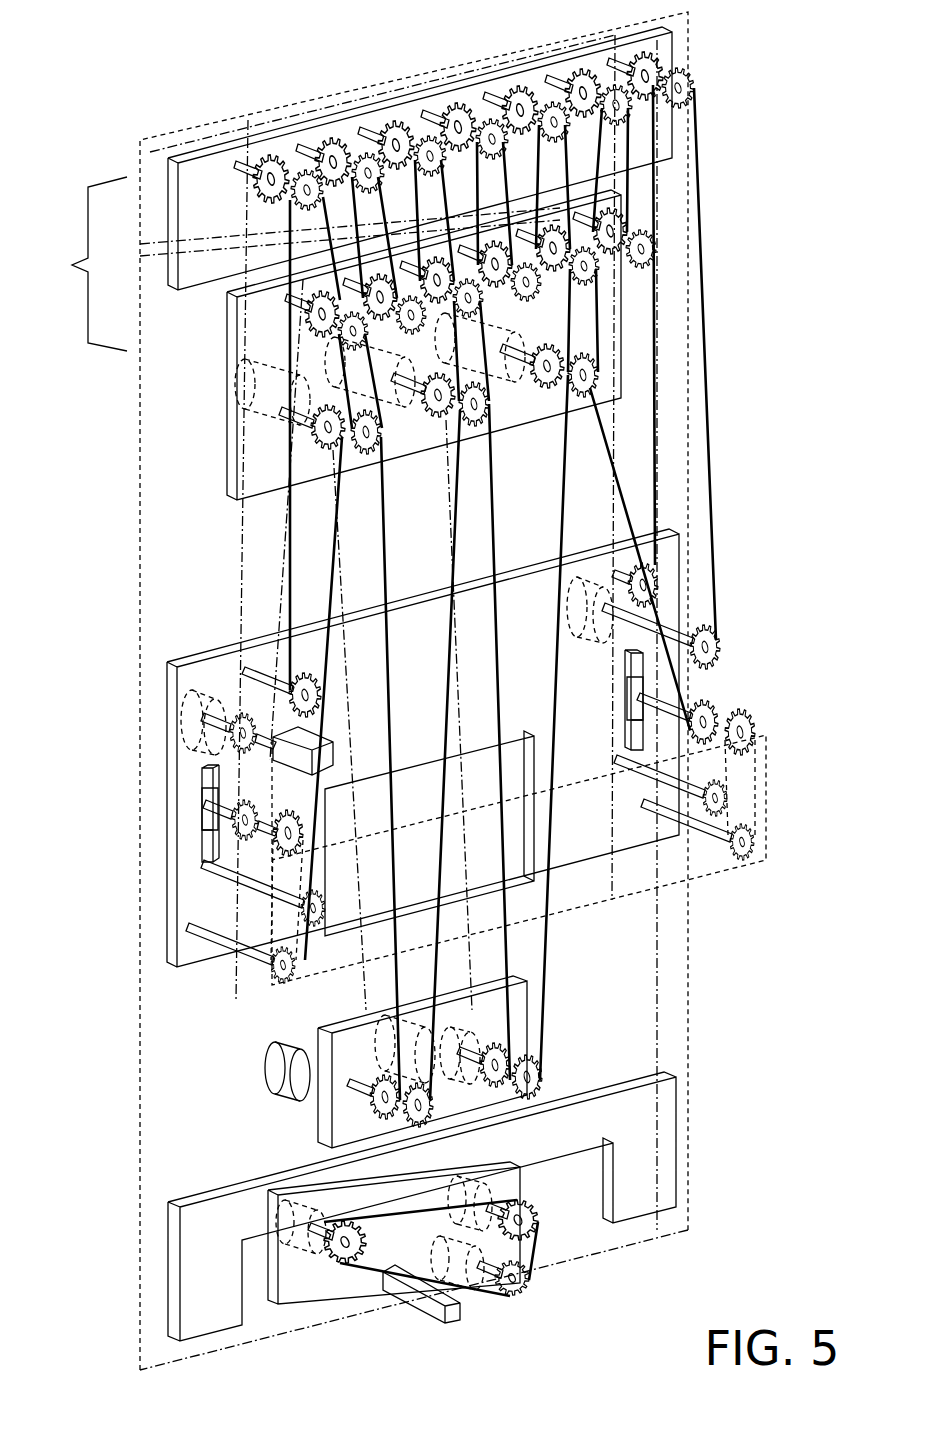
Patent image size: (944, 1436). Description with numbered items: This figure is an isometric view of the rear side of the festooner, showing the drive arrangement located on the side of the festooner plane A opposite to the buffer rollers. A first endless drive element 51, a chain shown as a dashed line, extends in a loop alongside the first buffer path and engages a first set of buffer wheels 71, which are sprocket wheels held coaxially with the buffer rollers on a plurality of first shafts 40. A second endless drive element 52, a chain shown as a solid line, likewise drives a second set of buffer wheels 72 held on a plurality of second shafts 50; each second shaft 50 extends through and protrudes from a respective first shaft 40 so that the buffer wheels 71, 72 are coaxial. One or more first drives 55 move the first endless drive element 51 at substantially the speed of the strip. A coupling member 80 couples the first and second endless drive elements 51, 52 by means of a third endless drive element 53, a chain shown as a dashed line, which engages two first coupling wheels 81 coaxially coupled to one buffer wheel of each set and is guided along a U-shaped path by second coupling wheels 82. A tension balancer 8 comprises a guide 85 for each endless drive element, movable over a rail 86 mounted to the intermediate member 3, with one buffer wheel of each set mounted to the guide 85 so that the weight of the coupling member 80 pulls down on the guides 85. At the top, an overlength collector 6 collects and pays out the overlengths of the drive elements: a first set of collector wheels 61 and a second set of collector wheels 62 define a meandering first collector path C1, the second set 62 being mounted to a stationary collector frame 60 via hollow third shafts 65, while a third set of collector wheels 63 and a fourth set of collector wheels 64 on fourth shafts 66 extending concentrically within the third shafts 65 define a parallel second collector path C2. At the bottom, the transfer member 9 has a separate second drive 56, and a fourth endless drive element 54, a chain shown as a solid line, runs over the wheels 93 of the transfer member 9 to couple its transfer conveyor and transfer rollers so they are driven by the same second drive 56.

The intermediate member 3 is at (172, 685).
The overlength collector 6 is at (83, 264).
The tension balancer 8 is at (628, 675).
The transfer member 9 is at (633, 1245).
The first shafts 40 is at (503, 365).
The second shafts 50 is at (545, 388).
The first endless drive element 51 is at (660, 462).
The second endless drive element 52 is at (690, 483).
The third endless drive element 53 is at (680, 893).
The fourth endless drive element 54 is at (470, 1290).
The first drive 55 is at (275, 757).
The second drive 56 is at (412, 1300).
The collector frame 60 is at (166, 190).
The first set of collector wheels 61 is at (622, 200).
The second set of collector wheels 62 is at (322, 145).
The third set of collector wheels 63 is at (556, 285).
The fourth set of collector wheels 64 is at (358, 183).
The third shafts 65 is at (212, 182).
The fourth shafts 66 is at (255, 168).
The first set of buffer wheels 71 is at (320, 445).
The second set of buffer wheels 72 is at (598, 378).
The coupling member 80 is at (755, 871).
The first coupling wheels 81 is at (755, 725).
The second coupling wheels 82 is at (756, 845).
The guide 85 is at (628, 703).
The rail 86 is at (630, 742).
The sprocket 93 is at (530, 1284).
The festooner plane A is at (140, 1062).
The first collector path C1 is at (248, 315).
The second collector path C2 is at (297, 330).